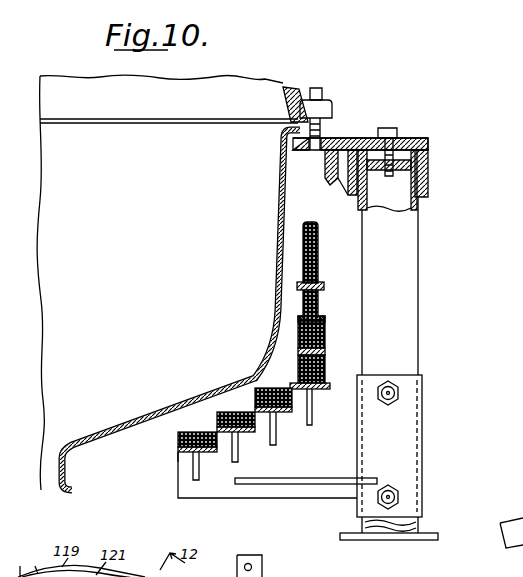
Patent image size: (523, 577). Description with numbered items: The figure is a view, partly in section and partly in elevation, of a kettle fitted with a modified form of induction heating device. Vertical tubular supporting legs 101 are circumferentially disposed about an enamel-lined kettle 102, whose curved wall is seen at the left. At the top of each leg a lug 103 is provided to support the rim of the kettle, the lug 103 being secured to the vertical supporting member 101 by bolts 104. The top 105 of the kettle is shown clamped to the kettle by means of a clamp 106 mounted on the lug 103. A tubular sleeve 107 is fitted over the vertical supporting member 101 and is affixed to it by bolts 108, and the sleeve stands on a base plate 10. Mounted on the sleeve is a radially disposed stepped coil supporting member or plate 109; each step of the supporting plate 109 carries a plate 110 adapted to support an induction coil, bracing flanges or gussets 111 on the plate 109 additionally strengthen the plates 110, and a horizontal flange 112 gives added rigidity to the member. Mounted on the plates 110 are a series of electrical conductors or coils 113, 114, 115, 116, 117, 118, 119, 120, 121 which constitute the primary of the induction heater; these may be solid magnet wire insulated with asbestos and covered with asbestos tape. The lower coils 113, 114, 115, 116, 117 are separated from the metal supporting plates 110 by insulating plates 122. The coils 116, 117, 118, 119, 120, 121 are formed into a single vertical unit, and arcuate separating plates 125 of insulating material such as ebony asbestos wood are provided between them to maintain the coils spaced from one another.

The base plate 10 is at (347, 560).
The vertical tubular supporting leg 101 is at (419, 301).
The enamel-lined kettle 102 is at (276, 256).
The lug 103 is at (351, 137).
The bolt 104 is at (398, 129).
The top of the kettle 105 is at (291, 92).
The clamp 106 is at (330, 104).
The tubular sleeve 107 is at (423, 433).
The bolt 108 is at (399, 393).
The stepped coil supporting plate 109 is at (177, 489).
The plate 110 is at (177, 459).
The bracing flange or gusset 111 is at (200, 471).
The horizontal flange 112 is at (311, 480).
The coil 113 is at (190, 430).
The coil 114 is at (235, 410).
The coil 115 is at (268, 380).
The coil 116 is at (299, 370).
The coil 117 is at (298, 332).
The coil 118 is at (326, 378).
The coil 119 is at (325, 339).
The coil 120 is at (318, 312).
The coil 121 is at (318, 264).
The insulating plate 122 is at (177, 449).
The arcuate separating plate 125 is at (324, 285).